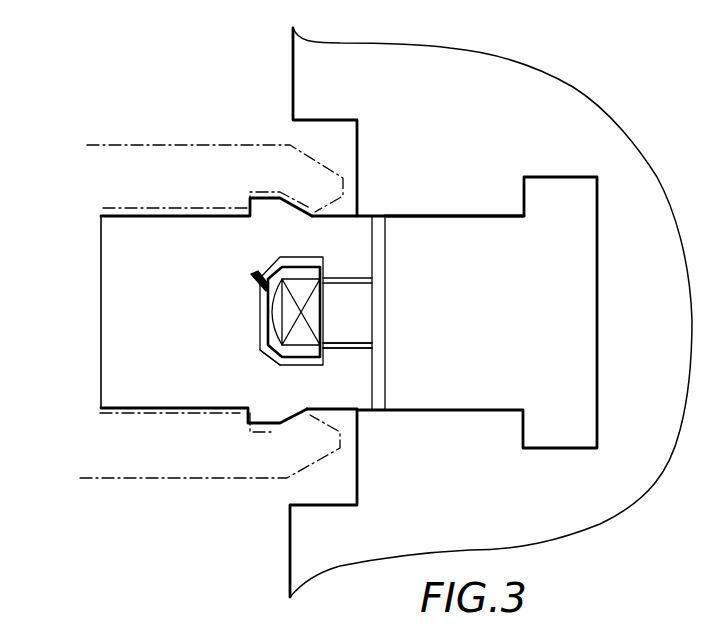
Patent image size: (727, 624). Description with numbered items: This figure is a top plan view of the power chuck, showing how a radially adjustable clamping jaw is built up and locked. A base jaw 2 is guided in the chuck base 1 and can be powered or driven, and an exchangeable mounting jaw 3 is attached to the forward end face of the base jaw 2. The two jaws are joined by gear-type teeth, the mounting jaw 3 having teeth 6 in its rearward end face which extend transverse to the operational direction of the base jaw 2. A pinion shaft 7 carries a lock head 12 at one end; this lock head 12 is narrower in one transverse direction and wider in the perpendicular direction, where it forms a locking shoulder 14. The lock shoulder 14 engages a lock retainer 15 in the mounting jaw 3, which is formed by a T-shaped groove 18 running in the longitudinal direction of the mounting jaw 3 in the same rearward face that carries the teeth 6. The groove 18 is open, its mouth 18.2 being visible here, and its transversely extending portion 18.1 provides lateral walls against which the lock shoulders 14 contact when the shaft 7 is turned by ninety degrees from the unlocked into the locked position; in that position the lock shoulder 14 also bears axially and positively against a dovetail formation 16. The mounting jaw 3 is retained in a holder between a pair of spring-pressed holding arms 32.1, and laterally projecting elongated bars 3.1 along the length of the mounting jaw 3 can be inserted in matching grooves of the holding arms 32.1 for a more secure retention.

The chuck base 1 is at (427, 514).
The base jaw 2 is at (457, 216).
The mounting jaw 3 is at (110, 308).
The laterally projecting elongated bars 3.1 is at (248, 198).
The teeth 6 is at (382, 216).
The pinion shaft 7 is at (360, 308).
The lock head 12 is at (267, 312).
The locking shoulder 14 is at (302, 272).
The lock retainer 15 is at (253, 280).
The dovetail formation 16 is at (322, 270).
The T-shaped groove 18 is at (263, 352).
The transversely extending portion 18.1 is at (278, 373).
The mouth 18.2 is at (373, 345).
The holding arms 32.1 is at (142, 158).